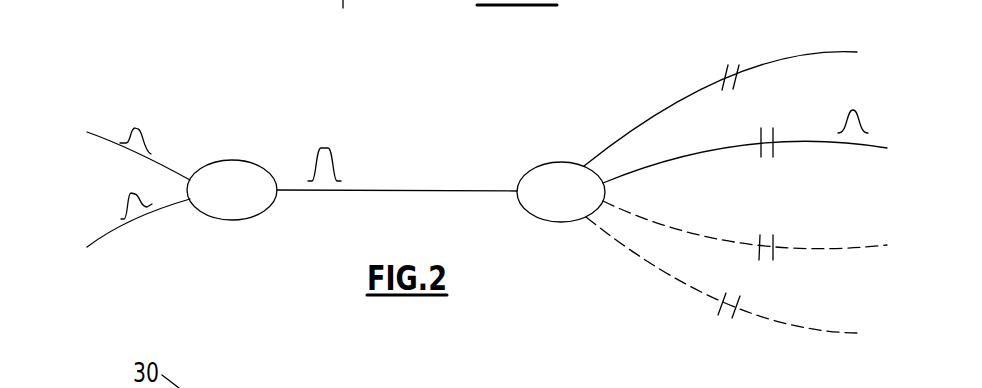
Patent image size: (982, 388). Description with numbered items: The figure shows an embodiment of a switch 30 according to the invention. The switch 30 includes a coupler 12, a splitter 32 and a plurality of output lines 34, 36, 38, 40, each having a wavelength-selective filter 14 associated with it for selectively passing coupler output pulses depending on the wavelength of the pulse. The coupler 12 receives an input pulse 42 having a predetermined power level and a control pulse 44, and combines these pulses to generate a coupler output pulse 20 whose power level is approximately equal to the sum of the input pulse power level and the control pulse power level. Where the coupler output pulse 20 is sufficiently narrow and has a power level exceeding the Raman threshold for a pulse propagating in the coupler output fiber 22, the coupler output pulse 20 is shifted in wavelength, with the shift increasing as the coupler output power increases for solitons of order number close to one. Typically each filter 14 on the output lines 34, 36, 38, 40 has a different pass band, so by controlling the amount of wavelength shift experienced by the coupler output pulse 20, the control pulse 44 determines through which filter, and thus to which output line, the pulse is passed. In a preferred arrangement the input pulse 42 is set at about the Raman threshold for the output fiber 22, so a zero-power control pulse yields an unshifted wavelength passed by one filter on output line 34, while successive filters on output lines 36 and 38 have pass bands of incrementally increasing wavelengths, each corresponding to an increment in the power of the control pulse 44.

The coupler 12 is at (263, 212).
The wavelength-selective filter 14 is at (716, 78).
The coupler output pulse 20 is at (348, 152).
The coupler output fiber 22 is at (418, 190).
The switch 30 is at (510, 110).
The splitter 32 is at (531, 214).
The output line 34 is at (837, 52).
The output line 36 is at (855, 147).
The output line 38 is at (832, 252).
The output line 40 is at (828, 333).
The input pulse 42 is at (156, 125).
The control pulse 44 is at (115, 187).